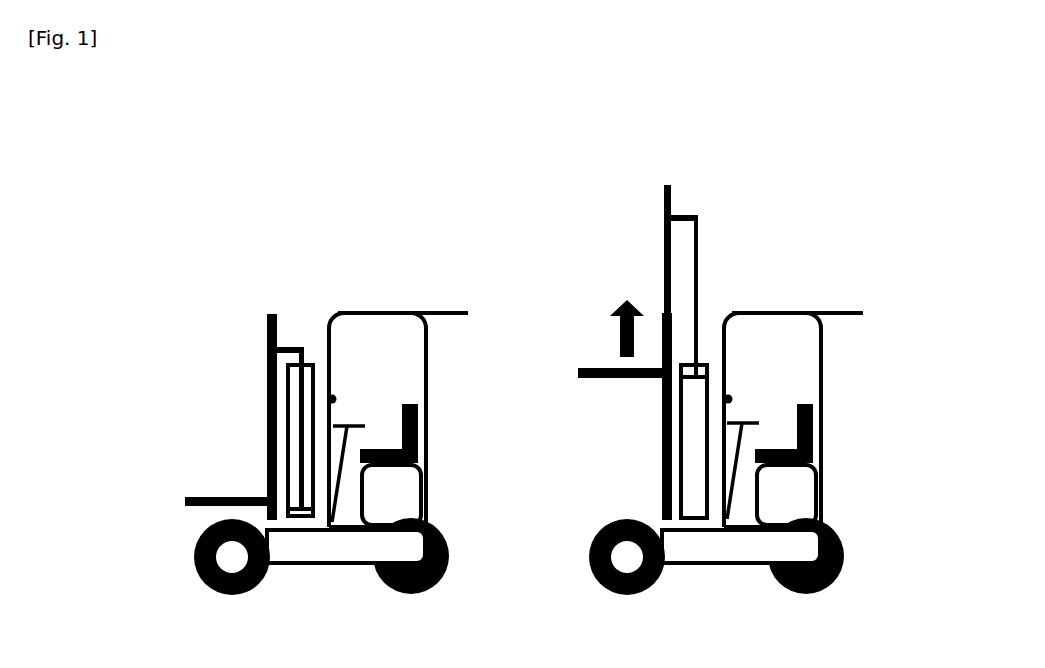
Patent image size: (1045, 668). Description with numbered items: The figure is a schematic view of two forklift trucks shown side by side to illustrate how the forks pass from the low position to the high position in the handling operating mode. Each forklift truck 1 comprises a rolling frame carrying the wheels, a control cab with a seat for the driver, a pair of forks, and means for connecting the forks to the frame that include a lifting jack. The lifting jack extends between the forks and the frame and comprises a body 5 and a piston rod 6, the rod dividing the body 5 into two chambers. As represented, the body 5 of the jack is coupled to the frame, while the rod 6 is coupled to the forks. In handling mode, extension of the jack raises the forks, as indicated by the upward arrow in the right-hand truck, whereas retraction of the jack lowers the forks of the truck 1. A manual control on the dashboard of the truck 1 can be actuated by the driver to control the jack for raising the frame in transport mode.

The forklift truck 1 is at (749, 376).
The body 5 is at (682, 447).
The piston rod 6 is at (698, 250).